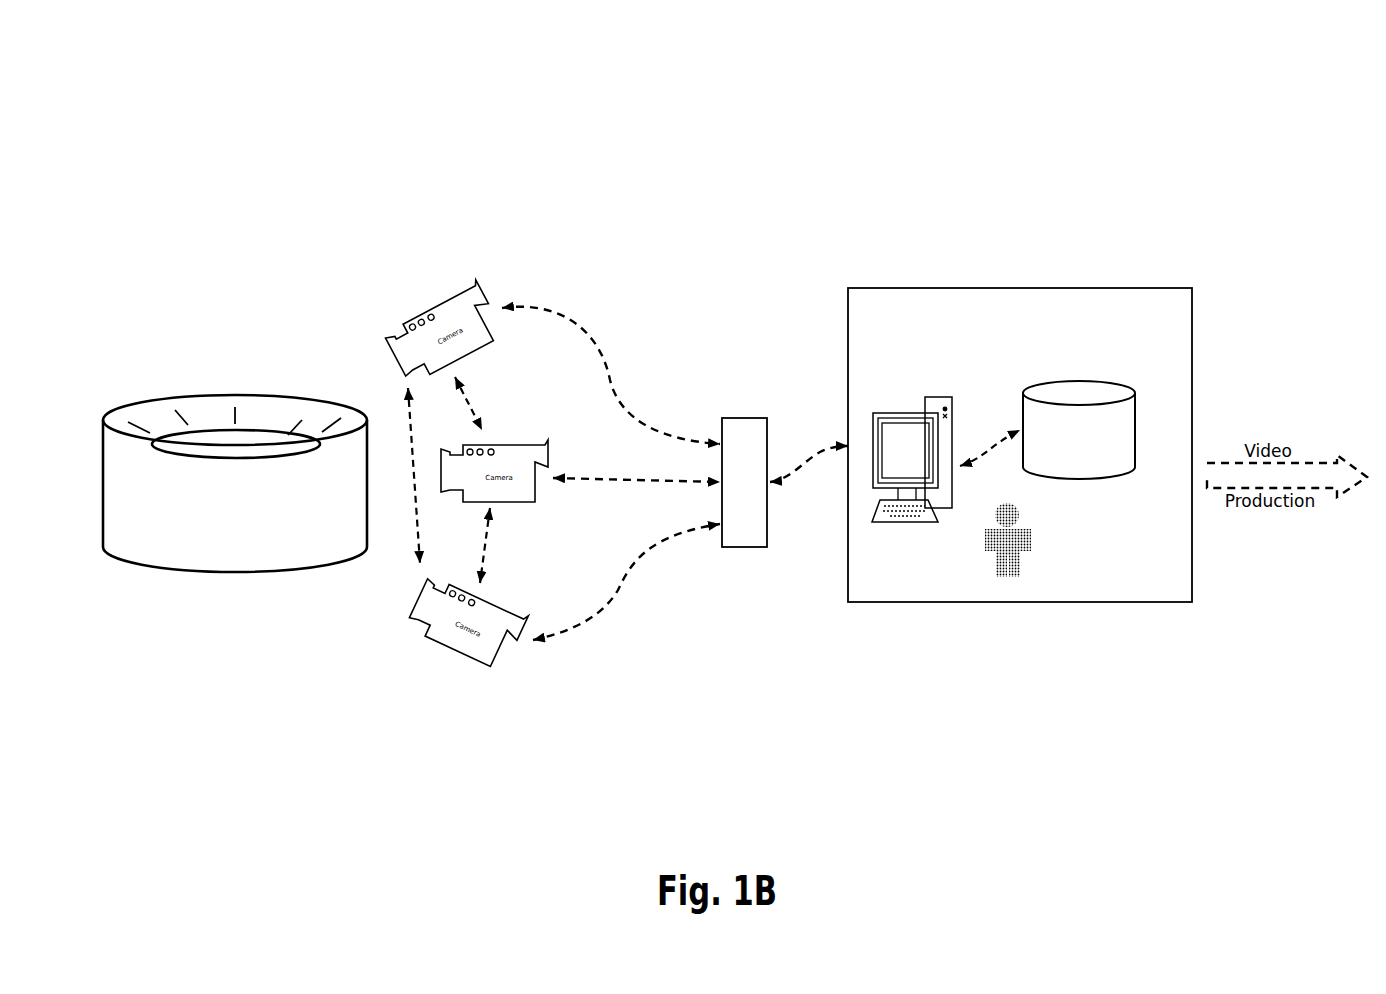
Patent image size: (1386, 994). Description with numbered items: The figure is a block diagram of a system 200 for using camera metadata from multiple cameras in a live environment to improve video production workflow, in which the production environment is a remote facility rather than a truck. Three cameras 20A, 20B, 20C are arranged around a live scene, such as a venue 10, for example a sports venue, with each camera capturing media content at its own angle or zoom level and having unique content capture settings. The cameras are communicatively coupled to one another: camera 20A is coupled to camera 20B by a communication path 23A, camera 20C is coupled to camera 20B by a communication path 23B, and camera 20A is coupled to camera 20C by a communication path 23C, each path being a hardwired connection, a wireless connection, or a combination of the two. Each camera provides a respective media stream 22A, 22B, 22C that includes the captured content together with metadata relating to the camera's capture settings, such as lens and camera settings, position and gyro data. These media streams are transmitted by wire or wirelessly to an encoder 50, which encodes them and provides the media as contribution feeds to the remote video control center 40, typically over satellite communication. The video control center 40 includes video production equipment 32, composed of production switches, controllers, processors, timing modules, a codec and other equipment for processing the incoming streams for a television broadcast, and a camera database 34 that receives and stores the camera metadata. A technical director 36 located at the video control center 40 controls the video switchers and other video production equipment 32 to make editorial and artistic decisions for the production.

The system 200 is at (745, 62).
The venue 10 is at (251, 549).
The camera 20A is at (430, 306).
The camera 20B is at (526, 440).
The camera 20C is at (466, 660).
The media stream 22A is at (598, 348).
The media stream 22B is at (622, 477).
The media stream 22C is at (608, 618).
The communication path 23A is at (479, 399).
The communication path 23B is at (471, 545).
The communication path 23C is at (405, 475).
The encoder 50 is at (742, 418).
The video control center 40 is at (1016, 352).
The video production equipment 32 is at (906, 400).
The camera database 34 is at (1070, 462).
The technical director 36 is at (1030, 548).